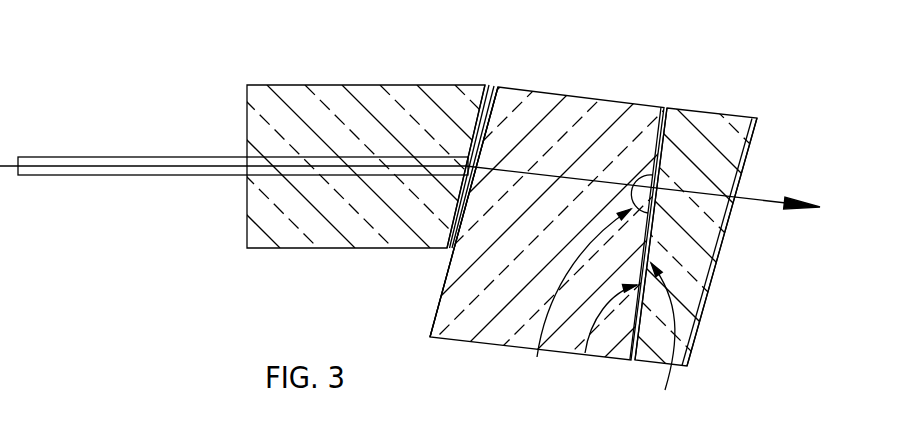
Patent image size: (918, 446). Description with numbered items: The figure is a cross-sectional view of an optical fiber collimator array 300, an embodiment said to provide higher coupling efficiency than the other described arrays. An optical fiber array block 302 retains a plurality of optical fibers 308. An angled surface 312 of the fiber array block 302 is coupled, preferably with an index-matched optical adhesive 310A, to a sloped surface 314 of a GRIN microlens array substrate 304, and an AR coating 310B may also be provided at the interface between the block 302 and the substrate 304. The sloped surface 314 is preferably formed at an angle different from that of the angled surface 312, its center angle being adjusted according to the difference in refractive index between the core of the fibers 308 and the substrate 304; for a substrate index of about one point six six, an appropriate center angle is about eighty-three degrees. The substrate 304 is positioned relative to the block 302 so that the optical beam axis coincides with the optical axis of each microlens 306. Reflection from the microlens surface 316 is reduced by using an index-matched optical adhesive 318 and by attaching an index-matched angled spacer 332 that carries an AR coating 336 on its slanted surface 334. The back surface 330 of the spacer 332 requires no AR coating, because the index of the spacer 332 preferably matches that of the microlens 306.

The optical fiber collimator array 300 is at (170, 95).
The optical fiber array block 302 is at (279, 85).
The GRIN microlens array substrate 304 is at (497, 350).
The microlens 306 is at (537, 357).
The optical fiber 308 is at (122, 176).
The index-matched optical adhesive 310A is at (488, 95).
The AR coating 310B is at (505, 88).
The angled surface 312 is at (462, 236).
The sloped surface 314 is at (439, 305).
The microlens surface 316 is at (669, 343).
The index-matched optical adhesive 318 is at (657, 131).
The back surface 330 is at (585, 353).
The index-matched angled spacer 332 is at (705, 110).
The slanted surface 334 is at (750, 184).
The AR coating 336 is at (720, 250).